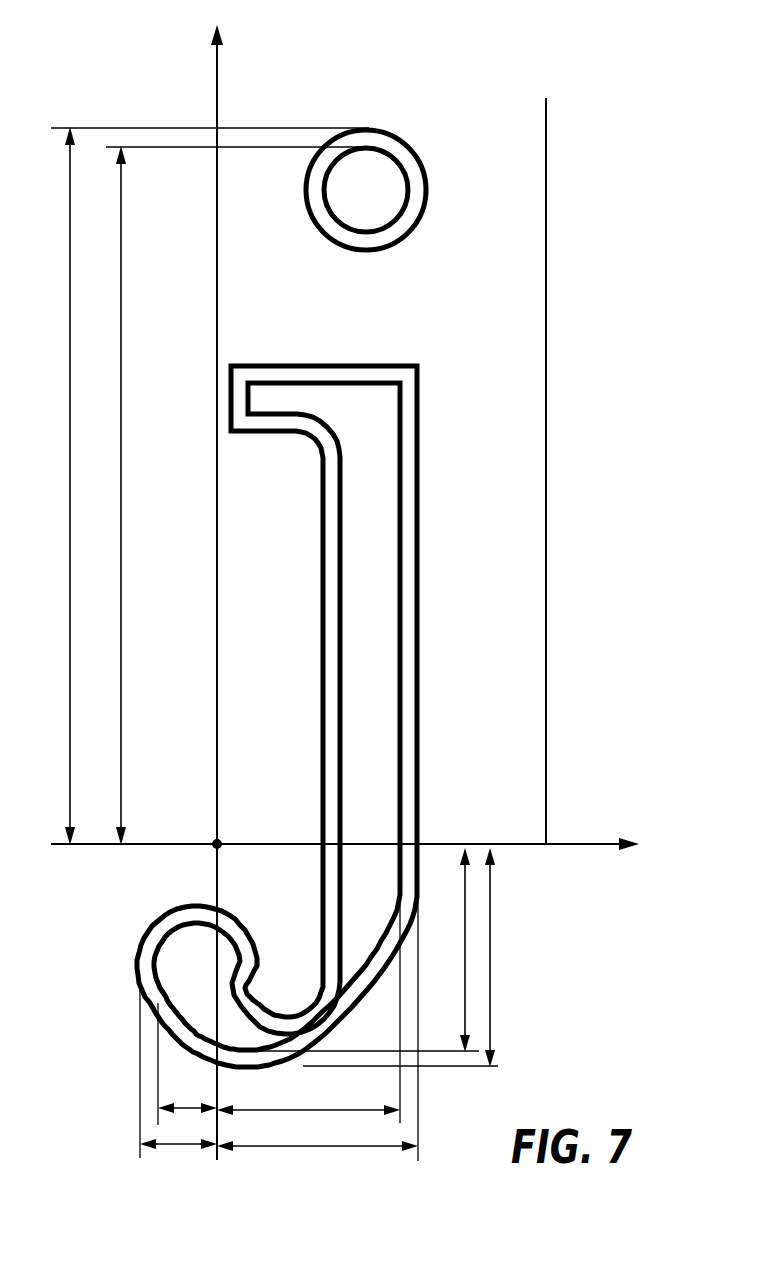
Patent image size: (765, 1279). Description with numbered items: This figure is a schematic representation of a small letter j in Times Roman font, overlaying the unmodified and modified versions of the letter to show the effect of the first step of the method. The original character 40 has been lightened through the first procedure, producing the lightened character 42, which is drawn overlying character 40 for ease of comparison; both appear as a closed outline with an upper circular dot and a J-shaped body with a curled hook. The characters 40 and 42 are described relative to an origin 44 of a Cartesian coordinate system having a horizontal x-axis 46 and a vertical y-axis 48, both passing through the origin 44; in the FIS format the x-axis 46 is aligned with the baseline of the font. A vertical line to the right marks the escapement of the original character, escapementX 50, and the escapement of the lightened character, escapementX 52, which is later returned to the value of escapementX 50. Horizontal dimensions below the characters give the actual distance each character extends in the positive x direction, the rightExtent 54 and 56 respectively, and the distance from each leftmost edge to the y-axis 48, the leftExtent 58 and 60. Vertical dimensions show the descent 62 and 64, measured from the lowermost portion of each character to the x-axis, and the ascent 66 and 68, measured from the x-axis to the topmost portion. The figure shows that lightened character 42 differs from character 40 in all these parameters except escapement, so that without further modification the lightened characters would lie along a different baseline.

The character 40 is at (410, 150).
The lightened character 42 is at (398, 216).
The origin 44 is at (212, 845).
The x-axis 46 is at (588, 841).
The y-axis 48 is at (214, 82).
The escapementX 50 is at (543, 671).
The escapementX 52 is at (543, 724).
The rightExtent 54 is at (327, 1145).
The rightExtent 56 is at (300, 1091).
The leftExtent 58 is at (177, 1145).
The leftExtent 60 is at (185, 1103).
The descent 62 is at (489, 995).
The descent 64 is at (464, 920).
The ascent 66 is at (66, 483).
The ascent 68 is at (118, 515).